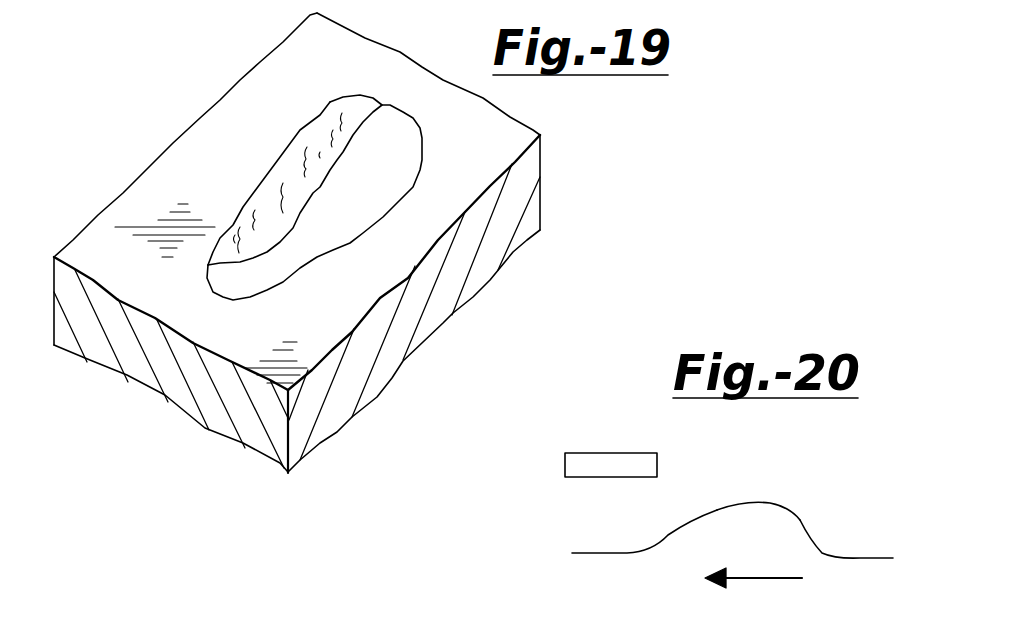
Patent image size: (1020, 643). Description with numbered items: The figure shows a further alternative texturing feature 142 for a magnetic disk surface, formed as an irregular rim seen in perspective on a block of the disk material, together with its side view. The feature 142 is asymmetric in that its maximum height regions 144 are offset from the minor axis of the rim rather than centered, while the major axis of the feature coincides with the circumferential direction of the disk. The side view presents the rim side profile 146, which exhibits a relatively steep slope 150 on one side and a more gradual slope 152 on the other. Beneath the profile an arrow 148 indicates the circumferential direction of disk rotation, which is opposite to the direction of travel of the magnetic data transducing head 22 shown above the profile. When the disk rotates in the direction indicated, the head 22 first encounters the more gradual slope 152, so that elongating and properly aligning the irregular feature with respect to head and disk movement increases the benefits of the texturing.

In FIG. 20, the magnetic data transducing head 22 is at (597, 453).
In FIG. 19, the texturing feature 142 is at (400, 170).
In FIG. 19, the maximum height regions 144 is at (352, 93).
In FIG. 20, the rim side profile 146 is at (800, 503).
In FIG. 20, the arrow 148 is at (763, 578).
In FIG. 20, the steep slope 150 is at (810, 535).
In FIG. 20, the gradual slope 152 is at (715, 510).